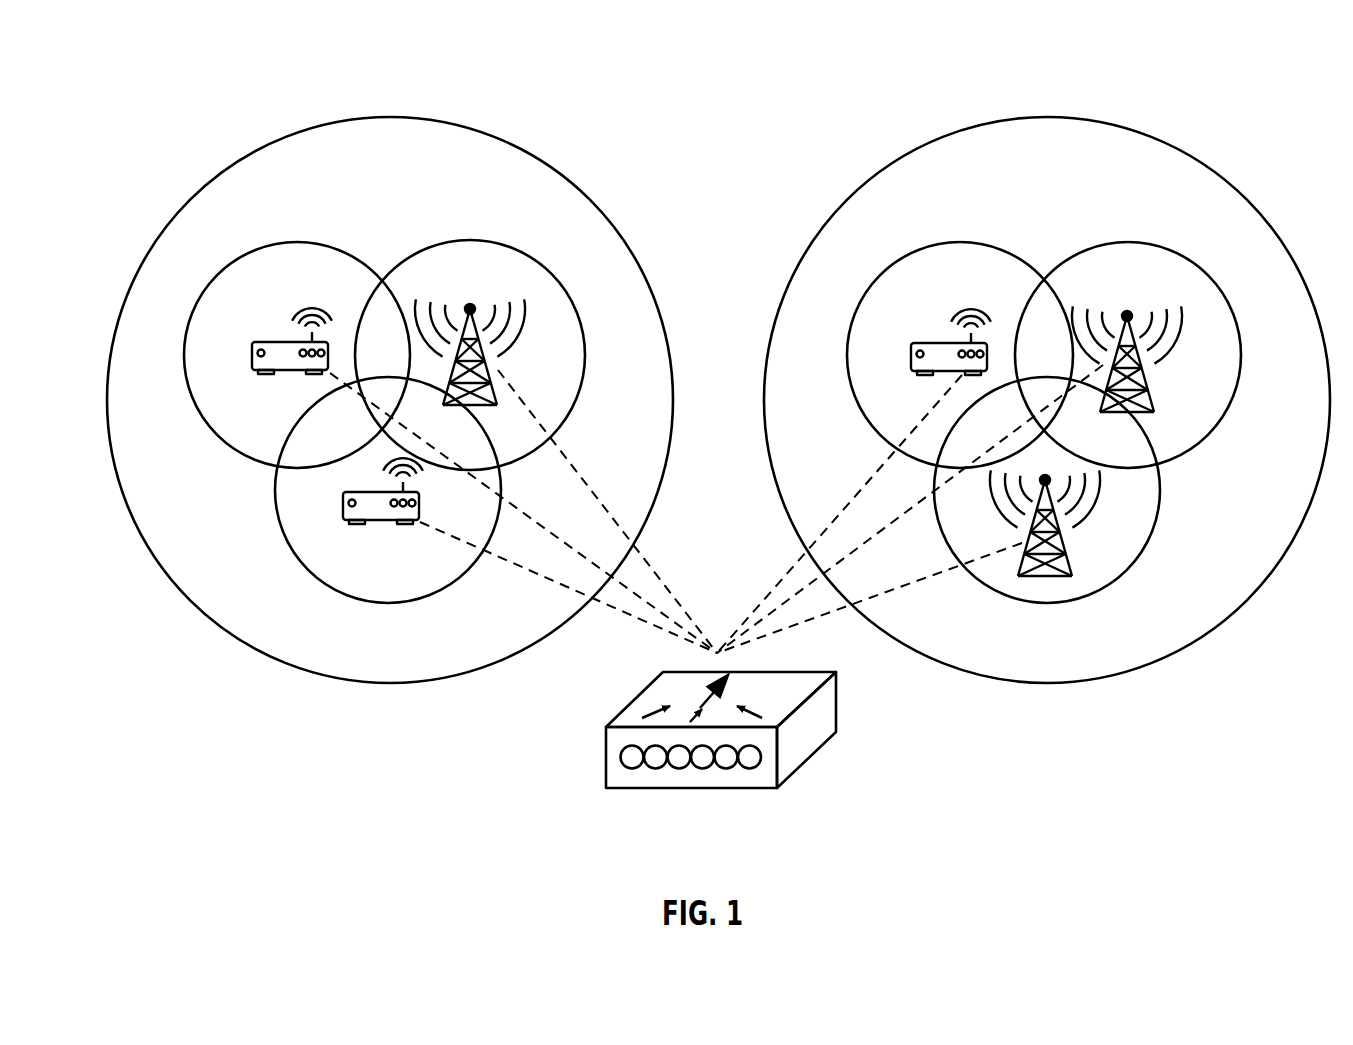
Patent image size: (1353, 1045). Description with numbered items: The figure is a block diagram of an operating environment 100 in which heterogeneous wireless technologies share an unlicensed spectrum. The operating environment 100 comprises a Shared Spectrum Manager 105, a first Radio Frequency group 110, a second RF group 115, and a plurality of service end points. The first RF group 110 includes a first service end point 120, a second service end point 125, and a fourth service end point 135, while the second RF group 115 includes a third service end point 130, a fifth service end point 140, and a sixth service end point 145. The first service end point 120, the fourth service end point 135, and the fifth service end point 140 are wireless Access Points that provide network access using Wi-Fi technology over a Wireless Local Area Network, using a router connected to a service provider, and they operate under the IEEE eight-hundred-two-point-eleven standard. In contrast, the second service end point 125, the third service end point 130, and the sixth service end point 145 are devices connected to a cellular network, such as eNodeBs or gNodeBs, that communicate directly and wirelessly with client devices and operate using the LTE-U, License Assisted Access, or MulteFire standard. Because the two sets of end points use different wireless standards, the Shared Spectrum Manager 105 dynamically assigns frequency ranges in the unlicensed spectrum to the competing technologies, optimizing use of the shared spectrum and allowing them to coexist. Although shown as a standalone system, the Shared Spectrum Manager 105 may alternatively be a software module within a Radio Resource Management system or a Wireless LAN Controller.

The operating environment 100 is at (770, 48).
The Shared Spectrum Manager 105 is at (606, 757).
The first Radio Frequency (RF) group 110 is at (391, 116).
The second RF group 115 is at (1048, 116).
The first service end point 120 is at (298, 241).
The second service end point 125 is at (469, 241).
The third service end point 130 is at (1129, 241).
The fourth service end point 135 is at (388, 604).
The fifth service end point 140 is at (958, 241).
The sixth service end point 145 is at (1047, 604).